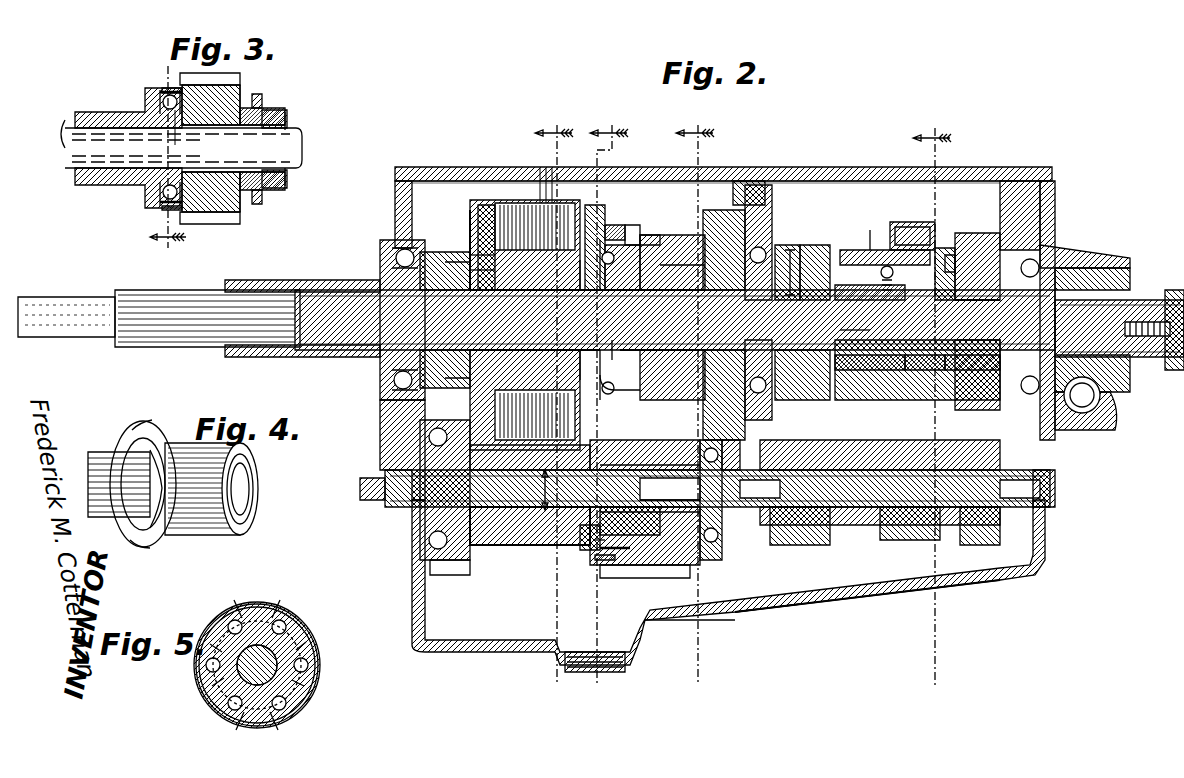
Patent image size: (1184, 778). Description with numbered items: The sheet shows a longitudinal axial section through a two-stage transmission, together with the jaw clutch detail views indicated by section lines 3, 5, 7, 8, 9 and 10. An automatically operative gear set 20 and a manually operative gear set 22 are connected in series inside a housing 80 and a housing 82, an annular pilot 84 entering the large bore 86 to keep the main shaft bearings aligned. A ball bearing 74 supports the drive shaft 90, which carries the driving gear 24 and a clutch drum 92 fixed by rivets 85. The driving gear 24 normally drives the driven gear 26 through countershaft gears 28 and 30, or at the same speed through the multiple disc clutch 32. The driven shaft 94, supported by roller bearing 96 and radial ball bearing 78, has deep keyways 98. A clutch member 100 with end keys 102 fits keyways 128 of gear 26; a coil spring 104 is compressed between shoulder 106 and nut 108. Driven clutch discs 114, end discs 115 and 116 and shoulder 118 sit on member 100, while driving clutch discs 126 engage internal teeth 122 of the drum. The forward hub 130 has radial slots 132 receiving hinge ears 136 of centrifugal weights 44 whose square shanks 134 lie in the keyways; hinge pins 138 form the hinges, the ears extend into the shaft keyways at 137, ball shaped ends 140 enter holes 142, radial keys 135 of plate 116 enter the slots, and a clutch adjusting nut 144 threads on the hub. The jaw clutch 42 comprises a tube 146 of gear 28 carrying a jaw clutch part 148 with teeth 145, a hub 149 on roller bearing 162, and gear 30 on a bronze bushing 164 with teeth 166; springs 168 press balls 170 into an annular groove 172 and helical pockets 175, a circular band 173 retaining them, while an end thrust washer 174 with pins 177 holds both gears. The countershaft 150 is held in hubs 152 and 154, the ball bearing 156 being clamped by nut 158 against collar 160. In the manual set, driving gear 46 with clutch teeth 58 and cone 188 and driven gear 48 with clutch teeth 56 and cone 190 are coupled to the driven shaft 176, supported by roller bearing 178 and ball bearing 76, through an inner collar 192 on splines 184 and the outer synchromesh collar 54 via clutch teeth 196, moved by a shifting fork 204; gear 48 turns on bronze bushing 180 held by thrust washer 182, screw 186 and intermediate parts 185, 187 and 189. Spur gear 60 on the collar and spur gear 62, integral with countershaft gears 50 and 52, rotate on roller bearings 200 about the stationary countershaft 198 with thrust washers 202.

In FIG. 2, the automatically operative gear set 20 is at (534, 590).
In FIG. 2, the manually operative gear set 22 is at (860, 565).
In FIG. 2, the driving gear 24 is at (437, 254).
In FIG. 2, the driven gear 26 is at (685, 234).
In FIG. 2, the countershaft gear 28 is at (458, 576).
In FIG. 3, the countershaft gear 30 is at (225, 226).
In FIG. 5, the countershaft gear 30 is at (318, 640).
In FIG. 2, the countershaft gear 30 is at (645, 568).
In FIG. 2, the automatic multiple disc clutch 32 is at (569, 181).
In FIG. 3, the jaw clutch 42 is at (282, 70).
In FIG. 2, the jaw clutch 42 is at (615, 642).
In FIG. 2, the centrifugal weights 44 is at (724, 218).
In FIG. 2, the driving gear 46 is at (791, 248).
In FIG. 2, the driven gear 48 is at (977, 240).
In FIG. 2, the countershaft gear 50 is at (792, 558).
In FIG. 2, the countershaft gear 52 is at (987, 540).
In FIG. 2, the synchromesh collar 54 is at (862, 252).
In FIG. 2, the clutch teeth 56 is at (950, 256).
In FIG. 2, the clutch teeth 58 is at (883, 266).
In FIG. 2, the spur gear 60 is at (940, 248).
In FIG. 2, the spur gear 62 is at (917, 540).
In FIG. 2, the ball bearing 74 is at (385, 254).
In FIG. 2, the ball bearing 76 is at (1052, 248).
In FIG. 2, the radial ball bearing 78 is at (786, 256).
In FIG. 2, the housing 80 is at (732, 615).
In FIG. 2, the housing 82 is at (792, 610).
In FIG. 2, the annular pilot 84 is at (758, 206).
In FIG. 2, the rivets 85 is at (471, 254).
In FIG. 2, the large bore 86 is at (748, 181).
In FIG. 2, the drive shaft 90 is at (346, 284).
In FIG. 2, the clutch drum 92 is at (478, 200).
In FIG. 2, the driven shaft 94 is at (662, 336).
In FIG. 2, the roller bearing 96 is at (445, 312).
In FIG. 2, the deep keyways 98 is at (652, 305).
In FIG. 2, the clutch member 100 is at (538, 304).
In FIG. 2, the end keys 102 is at (576, 304).
In FIG. 2, the coil spring 104 is at (538, 340).
In FIG. 2, the shoulder 106 is at (572, 340).
In FIG. 2, the nut 108 is at (492, 318).
In FIG. 2, the driven clutch discs 114 is at (538, 202).
In FIG. 2, the end disc 115 is at (480, 230).
In FIG. 2, the end disc 116 is at (595, 210).
In FIG. 2, the shoulder 118 is at (490, 274).
In FIG. 2, the internal teeth 122 is at (496, 200).
In FIG. 2, the driving clutch discs 126 is at (544, 172).
In FIG. 2, the deep internal keyways 128 is at (660, 240).
In FIG. 2, the forward hub 130 is at (627, 234).
In FIG. 2, the radial slots 132 is at (605, 226).
In FIG. 2, the square shank 134 is at (690, 262).
In FIG. 2, the radial keys 135 is at (568, 236).
In FIG. 2, the hinge ear 136 is at (630, 252).
In FIG. 2, the key portion of hinge ear 137 is at (640, 344).
In FIG. 2, the hinge pins 138 is at (632, 384).
In FIG. 2, the ball shaped ends 140 is at (618, 304).
In FIG. 2, the holes 142 is at (622, 340).
In FIG. 2, the clutch adjusting nut 144 is at (613, 224).
In FIG. 4, the jaw clutch teeth 145 is at (140, 546).
In FIG. 2, the jaw clutch teeth 145 is at (595, 545).
In FIG. 3, the tube 146 is at (85, 178).
In FIG. 4, the tube 146 is at (100, 464).
In FIG. 2, the tube 146 is at (540, 526).
In FIG. 3, the jaw clutch part 148 is at (148, 100).
In FIG. 4, the jaw clutch part 148 is at (122, 520).
In FIG. 2, the jaw clutch part 148 is at (580, 542).
In FIG. 3, the hub 149 is at (245, 106).
In FIG. 4, the hub 149 is at (251, 474).
In FIG. 5, the hub 149 is at (268, 604).
In FIG. 2, the hub 149 is at (625, 475).
In FIG. 5, the countershaft 150 is at (195, 688).
In FIG. 2, the countershaft 150 is at (505, 528).
In FIG. 2, the hub 152 is at (406, 526).
In FIG. 3, the hub 154 is at (278, 188).
In FIG. 2, the hub 154 is at (711, 543).
In FIG. 2, the ball bearing 156 is at (388, 448).
In FIG. 2, the nut 158 is at (360, 468).
In FIG. 2, the collar 160 is at (500, 490).
In FIG. 3, the roller bearing 162 is at (215, 134).
In FIG. 2, the roller bearing 162 is at (657, 475).
In FIG. 3, the bronze bushing 164 is at (246, 187).
In FIG. 4, the bronze bushing 164 is at (246, 450).
In FIG. 2, the bronze bushing 164 is at (655, 505).
In FIG. 3, the jaw clutch teeth 166 is at (160, 96).
In FIG. 2, the jaw clutch teeth 166 is at (612, 565).
In FIG. 3, the springs 168 is at (208, 190).
In FIG. 5, the springs 168 is at (293, 614).
In FIG. 3, the balls 170 is at (125, 182).
In FIG. 5, the balls 170 is at (306, 698).
In FIG. 3, the annular groove 172 is at (190, 110).
In FIG. 4, the annular groove 172 is at (172, 432).
In FIG. 2, the annular groove 172 is at (625, 575).
In FIG. 3, the circular band 173 is at (164, 90).
In FIG. 5, the circular band 173 is at (300, 630).
In FIG. 2, the circular band 173 is at (595, 560).
In FIG. 3, the end thrust washer 174 is at (262, 100).
In FIG. 2, the end thrust washer 174 is at (705, 443).
In FIG. 3, the pockets 175 is at (174, 112).
In FIG. 4, the pockets 175 is at (162, 478).
In FIG. 5, the pockets 175 is at (308, 680).
In FIG. 2, the driven shaft 176 is at (860, 330).
In FIG. 3, the pins 177 is at (286, 180).
In FIG. 2, the roller bearing 178 is at (802, 354).
In FIG. 2, the bronze bushing 180 is at (977, 313).
In FIG. 2, the thrust washer 182 is at (972, 352).
In FIG. 2, the splines 184 is at (920, 352).
In FIG. 2, the intermediate part 185 is at (1170, 288).
In FIG. 2, the screw 186 is at (1125, 394).
In FIG. 2, the intermediate part 187 is at (1056, 282).
In FIG. 2, the friction clutch cone 188 is at (870, 302).
In FIG. 2, the intermediate part 189 is at (1103, 328).
In FIG. 2, the friction clutch cone 190 is at (917, 352).
In FIG. 2, the inner collar 192 is at (870, 352).
In FIG. 2, the clutch teeth 196 is at (870, 247).
In FIG. 2, the countershaft 198 is at (1048, 486).
In FIG. 2, the roller bearings 200 is at (857, 470).
In FIG. 2, the thrust washers 202 is at (782, 480).
In FIG. 2, the shifting fork 204 is at (898, 226).
In FIG. 2, the section line 3 is at (627, 490).
In FIG. 3, the section line 5 is at (168, 162).
In FIG. 2, the section line 7 is at (932, 406).
In FIG. 2, the section line 8 is at (695, 404).
In FIG. 2, the section line 9 is at (607, 404).
In FIG. 2, the section line 10 is at (554, 404).